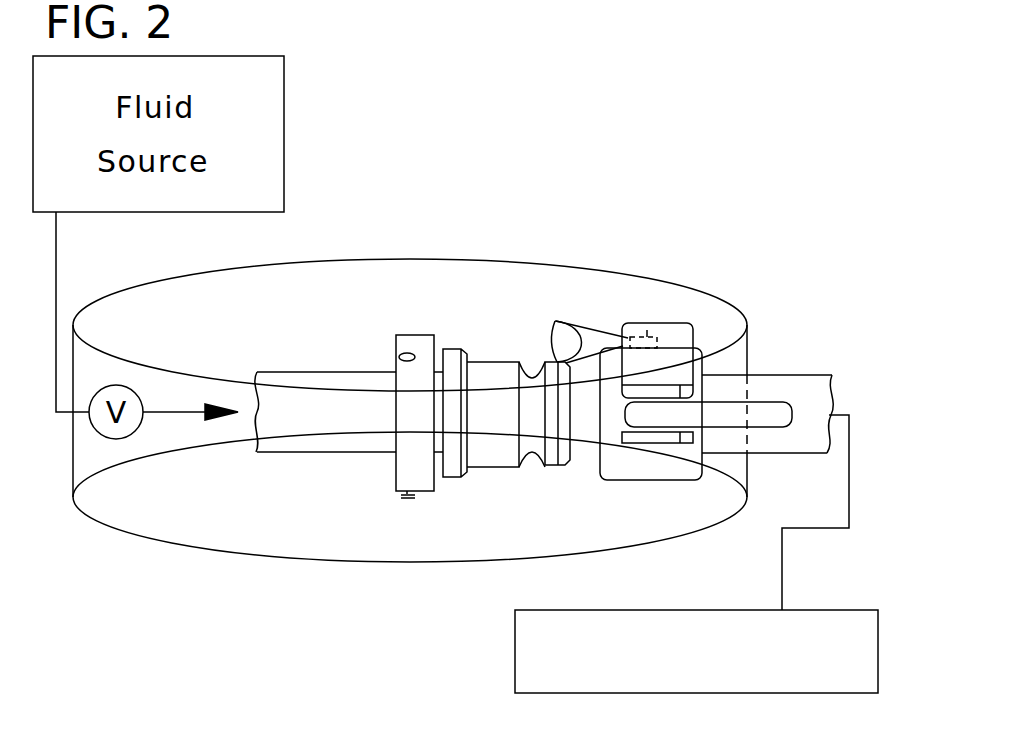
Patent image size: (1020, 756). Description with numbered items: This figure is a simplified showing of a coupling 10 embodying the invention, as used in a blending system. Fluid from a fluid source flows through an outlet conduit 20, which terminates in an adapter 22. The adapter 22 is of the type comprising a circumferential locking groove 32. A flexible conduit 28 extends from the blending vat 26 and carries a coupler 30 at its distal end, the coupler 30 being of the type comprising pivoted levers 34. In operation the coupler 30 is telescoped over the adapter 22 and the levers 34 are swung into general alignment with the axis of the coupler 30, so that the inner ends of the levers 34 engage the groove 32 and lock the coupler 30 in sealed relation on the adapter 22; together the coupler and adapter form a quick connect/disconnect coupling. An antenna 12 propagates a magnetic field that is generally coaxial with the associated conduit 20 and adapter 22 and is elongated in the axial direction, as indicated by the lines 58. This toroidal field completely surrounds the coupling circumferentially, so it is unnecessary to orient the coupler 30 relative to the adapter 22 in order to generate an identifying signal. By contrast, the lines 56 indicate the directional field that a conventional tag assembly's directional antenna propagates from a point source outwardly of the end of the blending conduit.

The electrode / nozzle holder block 10 is at (652, 324).
The antenna 12 is at (413, 335).
The outlet conduit 20 is at (353, 453).
The adapter 22 is at (484, 361).
The blending vat 26 is at (515, 623).
The flexible conduit 28 is at (775, 455).
The coupler 30 is at (642, 470).
The circumferential locking groove 32 is at (527, 457).
The pivoted lever 34 is at (767, 402).
The directional field lines 56 is at (556, 322).
The magnetic field lines 58 is at (210, 272).